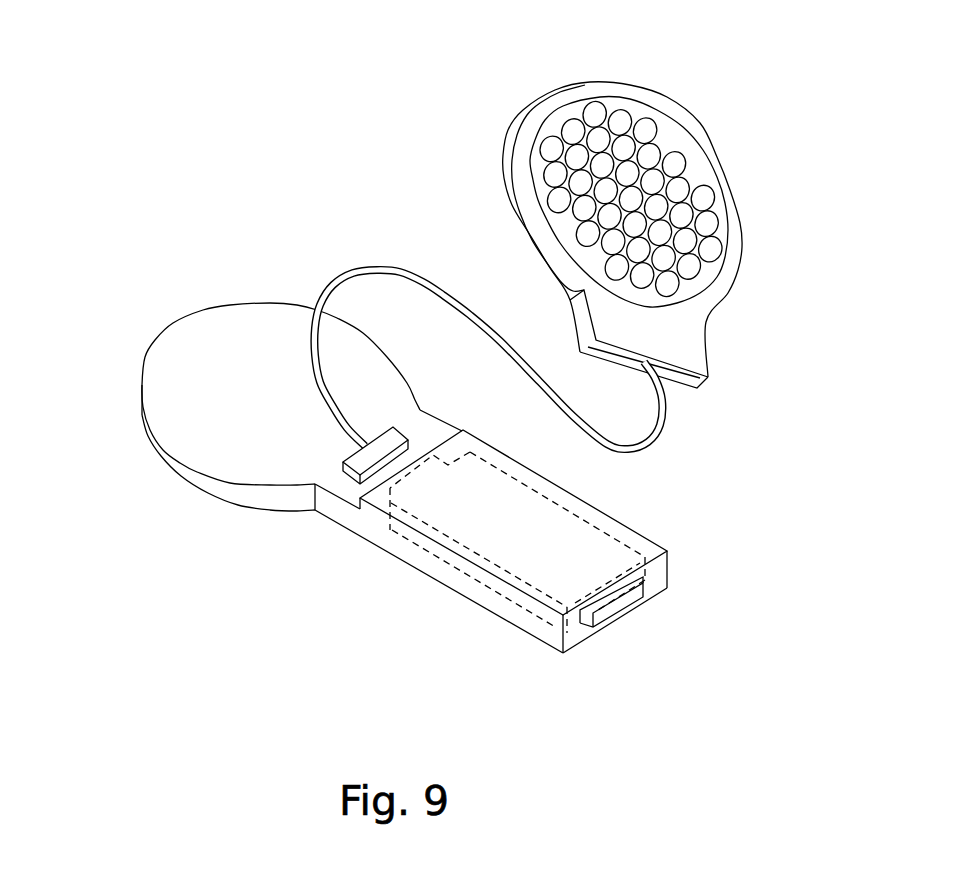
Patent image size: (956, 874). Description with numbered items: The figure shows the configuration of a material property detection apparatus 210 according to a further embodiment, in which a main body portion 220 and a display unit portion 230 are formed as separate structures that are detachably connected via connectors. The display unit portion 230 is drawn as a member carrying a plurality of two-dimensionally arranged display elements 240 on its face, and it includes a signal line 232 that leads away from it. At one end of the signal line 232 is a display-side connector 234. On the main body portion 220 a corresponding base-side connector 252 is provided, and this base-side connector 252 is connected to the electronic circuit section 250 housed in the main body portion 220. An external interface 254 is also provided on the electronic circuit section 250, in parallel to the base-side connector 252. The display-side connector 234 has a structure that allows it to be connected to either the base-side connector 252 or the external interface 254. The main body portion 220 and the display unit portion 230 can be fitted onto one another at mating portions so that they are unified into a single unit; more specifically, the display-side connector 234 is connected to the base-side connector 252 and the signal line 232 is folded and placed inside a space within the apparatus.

The material property detection apparatus 210 is at (180, 136).
The main body portion 220 is at (253, 352).
The display unit portion 230 is at (512, 150).
The signal line 232 is at (401, 268).
The display-side connector 234 is at (350, 453).
The display elements 240 is at (708, 222).
The electronic circuit section 250 is at (482, 579).
The base-side connector 252 is at (390, 490).
The external interface 254 is at (617, 603).